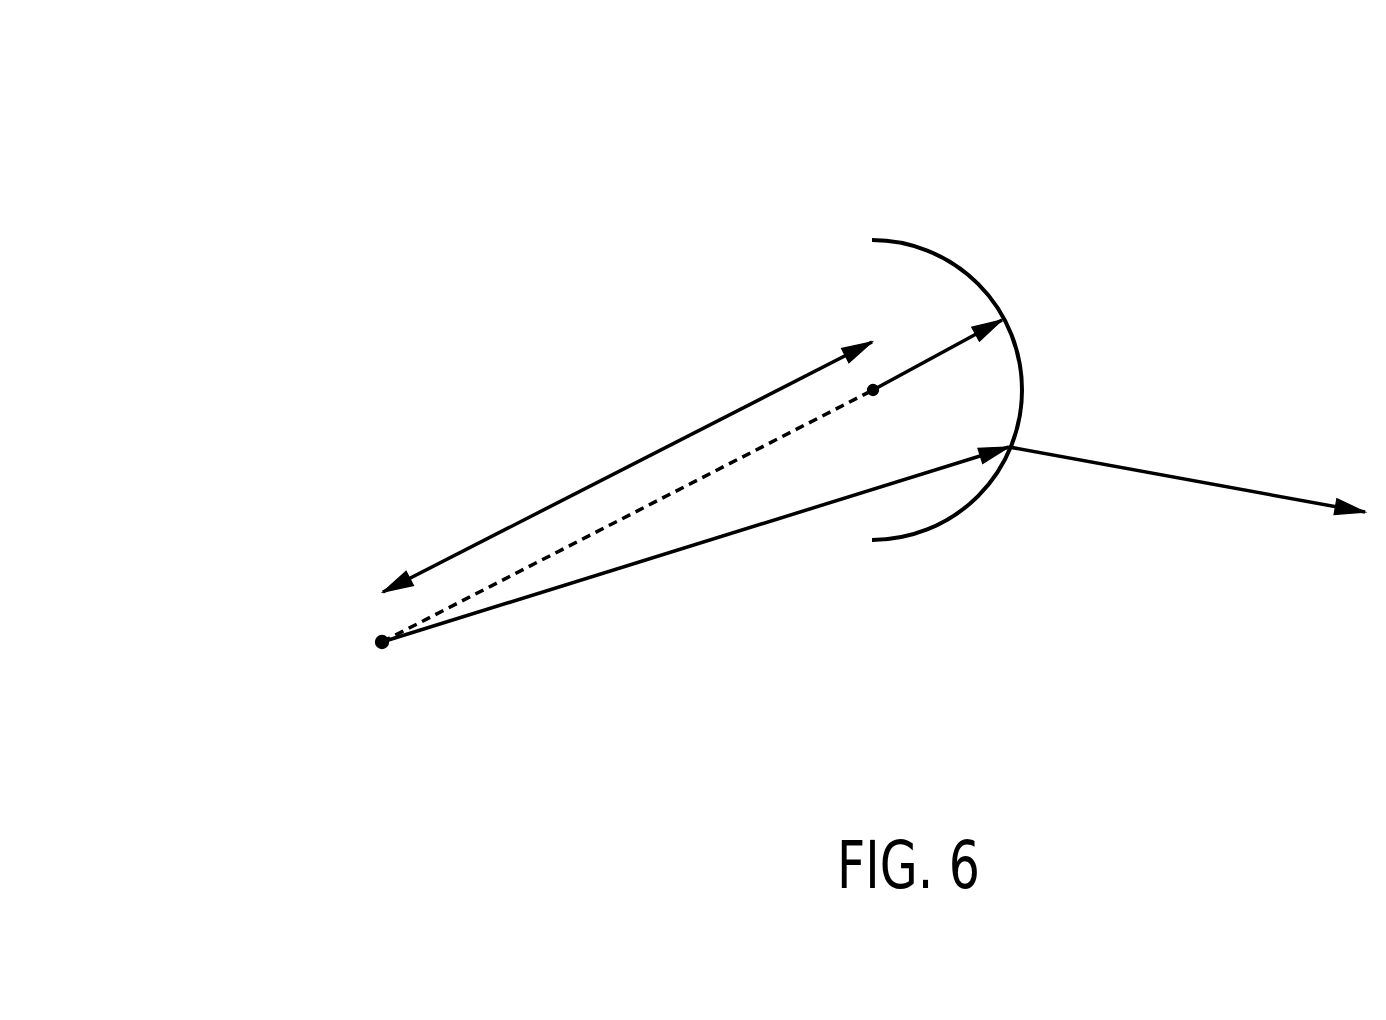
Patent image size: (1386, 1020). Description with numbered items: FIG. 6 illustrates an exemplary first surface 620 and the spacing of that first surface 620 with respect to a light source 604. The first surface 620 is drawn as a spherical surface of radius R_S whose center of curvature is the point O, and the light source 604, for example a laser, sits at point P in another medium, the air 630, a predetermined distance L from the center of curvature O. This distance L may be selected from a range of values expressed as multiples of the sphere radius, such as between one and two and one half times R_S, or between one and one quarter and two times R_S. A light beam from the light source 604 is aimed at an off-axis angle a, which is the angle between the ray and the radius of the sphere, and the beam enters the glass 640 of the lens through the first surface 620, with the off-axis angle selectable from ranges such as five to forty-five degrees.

The first surface 620 is at (978, 282).
The air 630 is at (702, 334).
The glass 640 is at (1195, 597).
The light source 604 is at (242, 654).